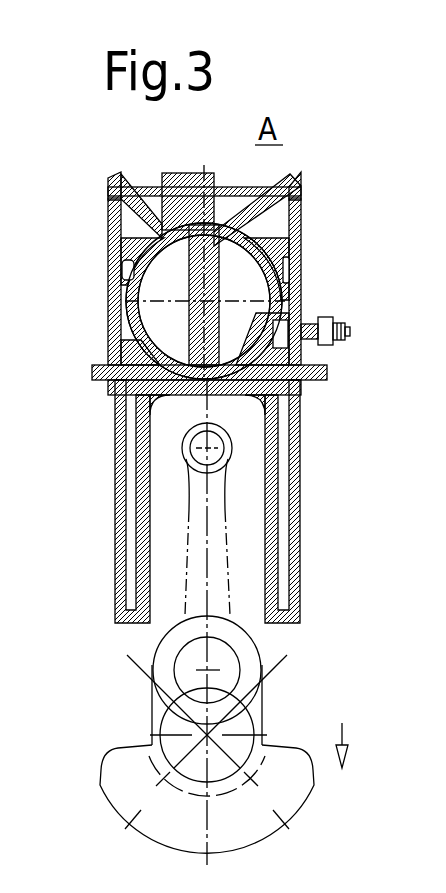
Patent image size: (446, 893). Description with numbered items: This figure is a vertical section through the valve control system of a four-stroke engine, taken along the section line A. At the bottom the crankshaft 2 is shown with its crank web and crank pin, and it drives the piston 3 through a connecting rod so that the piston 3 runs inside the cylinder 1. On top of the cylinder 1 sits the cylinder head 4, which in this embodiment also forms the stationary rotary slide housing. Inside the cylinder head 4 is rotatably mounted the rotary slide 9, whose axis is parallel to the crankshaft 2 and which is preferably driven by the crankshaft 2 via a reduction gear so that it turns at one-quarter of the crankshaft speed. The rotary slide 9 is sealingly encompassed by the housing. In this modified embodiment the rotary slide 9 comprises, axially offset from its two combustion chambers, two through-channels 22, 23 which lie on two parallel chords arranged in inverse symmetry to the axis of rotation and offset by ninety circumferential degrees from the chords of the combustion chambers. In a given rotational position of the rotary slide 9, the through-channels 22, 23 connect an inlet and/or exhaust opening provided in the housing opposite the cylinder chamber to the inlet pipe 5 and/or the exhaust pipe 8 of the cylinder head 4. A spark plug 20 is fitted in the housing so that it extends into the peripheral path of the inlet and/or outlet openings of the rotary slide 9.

The cylinder 1 is at (118, 540).
The crankshaft 2 is at (237, 720).
The piston 3 is at (153, 395).
The cylinder head 4 is at (108, 337).
The inlet pipe 5 is at (295, 200).
The exhaust pipe 8 is at (118, 222).
The rotary slide 9 is at (202, 258).
The spark plug 20 is at (350, 331).
The through-channel 22 is at (230, 330).
The through-channel 23 is at (190, 295).